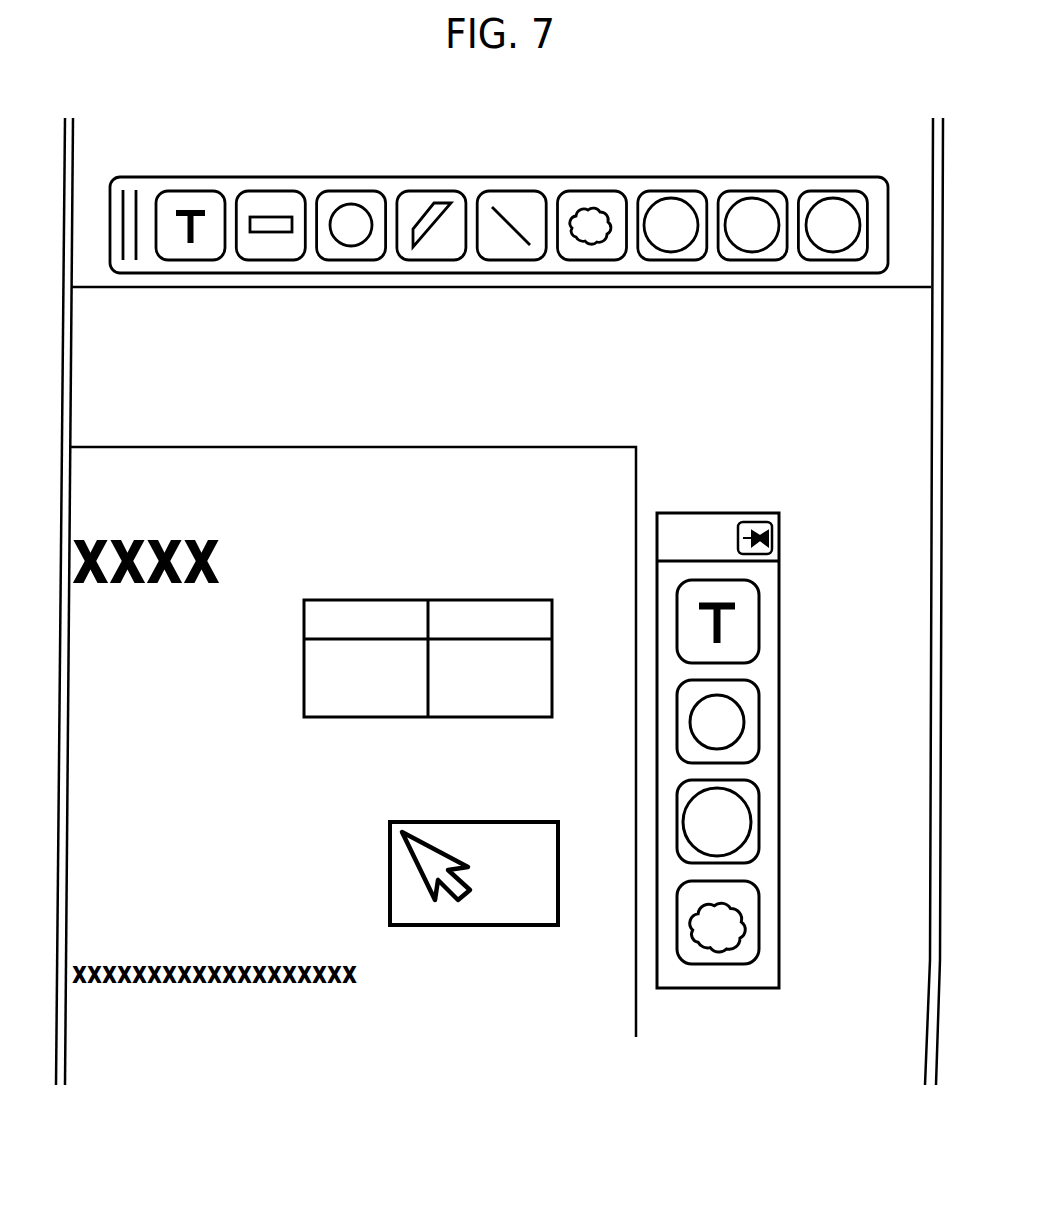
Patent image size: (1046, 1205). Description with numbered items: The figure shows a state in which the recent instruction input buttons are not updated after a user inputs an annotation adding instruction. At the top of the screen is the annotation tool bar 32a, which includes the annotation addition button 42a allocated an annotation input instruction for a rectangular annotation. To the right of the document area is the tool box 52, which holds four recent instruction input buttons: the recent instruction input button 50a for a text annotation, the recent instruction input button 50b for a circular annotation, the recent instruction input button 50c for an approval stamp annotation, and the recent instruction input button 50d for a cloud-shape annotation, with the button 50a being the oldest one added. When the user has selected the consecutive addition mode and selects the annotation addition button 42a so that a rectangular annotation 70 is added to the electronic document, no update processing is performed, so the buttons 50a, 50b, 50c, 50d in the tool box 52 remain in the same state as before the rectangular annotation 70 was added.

The annotation tool bar 32a is at (499, 172).
The annotation addition button 42a is at (271, 190).
The tool box 52 is at (776, 703).
The recent instruction input button 50a is at (752, 622).
The recent instruction input button 50b is at (752, 722).
The recent instruction input button 50c is at (752, 823).
The recent instruction input button 50d is at (752, 925).
The rectangular annotation 70 is at (471, 947).